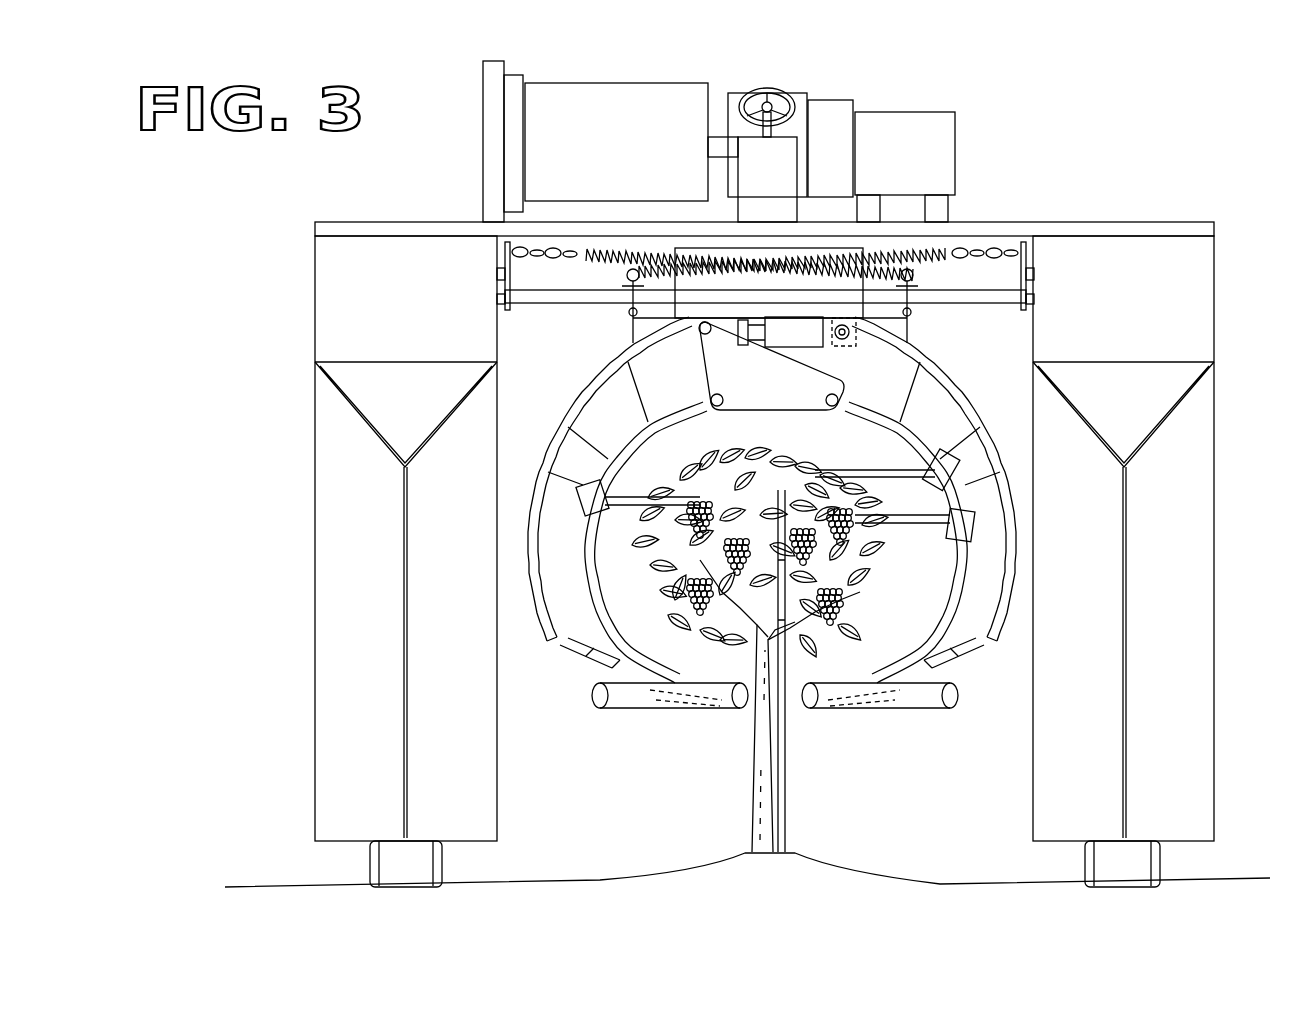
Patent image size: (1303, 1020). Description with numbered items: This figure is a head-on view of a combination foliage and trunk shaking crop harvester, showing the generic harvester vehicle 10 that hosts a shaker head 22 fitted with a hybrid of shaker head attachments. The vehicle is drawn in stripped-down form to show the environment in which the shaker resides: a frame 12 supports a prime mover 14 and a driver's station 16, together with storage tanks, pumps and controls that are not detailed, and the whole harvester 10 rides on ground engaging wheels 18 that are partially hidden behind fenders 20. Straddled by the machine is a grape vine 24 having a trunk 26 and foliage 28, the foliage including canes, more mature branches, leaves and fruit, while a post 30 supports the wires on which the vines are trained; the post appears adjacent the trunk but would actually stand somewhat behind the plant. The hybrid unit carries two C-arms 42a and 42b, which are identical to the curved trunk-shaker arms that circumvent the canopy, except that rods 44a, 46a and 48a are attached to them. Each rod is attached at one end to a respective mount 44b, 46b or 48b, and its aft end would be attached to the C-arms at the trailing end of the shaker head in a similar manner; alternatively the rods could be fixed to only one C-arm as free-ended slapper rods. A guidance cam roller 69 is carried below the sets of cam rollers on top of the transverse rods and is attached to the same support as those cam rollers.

The harvester 10 is at (1185, 140).
The frame 12 is at (1073, 222).
The prime mover 14 is at (719, 141).
The driver's station 16 is at (795, 95).
The ground engaging wheels 18 is at (1162, 862).
The fenders 20 is at (1214, 610).
The shaker head 22 is at (955, 225).
The grape vine 24 is at (690, 667).
The trunk 26 is at (752, 787).
The foliage 28 is at (858, 600).
The post 30 is at (785, 765).
The C-arm 42a is at (645, 412).
The C-arm 42b is at (905, 412).
The rod 44a is at (631, 498).
The mount 44b is at (580, 509).
The rod 46a is at (872, 468).
The mount 46b is at (955, 470).
The rod 48a is at (912, 527).
The mount 48b is at (973, 517).
The guidance cam roller 69 is at (630, 312).